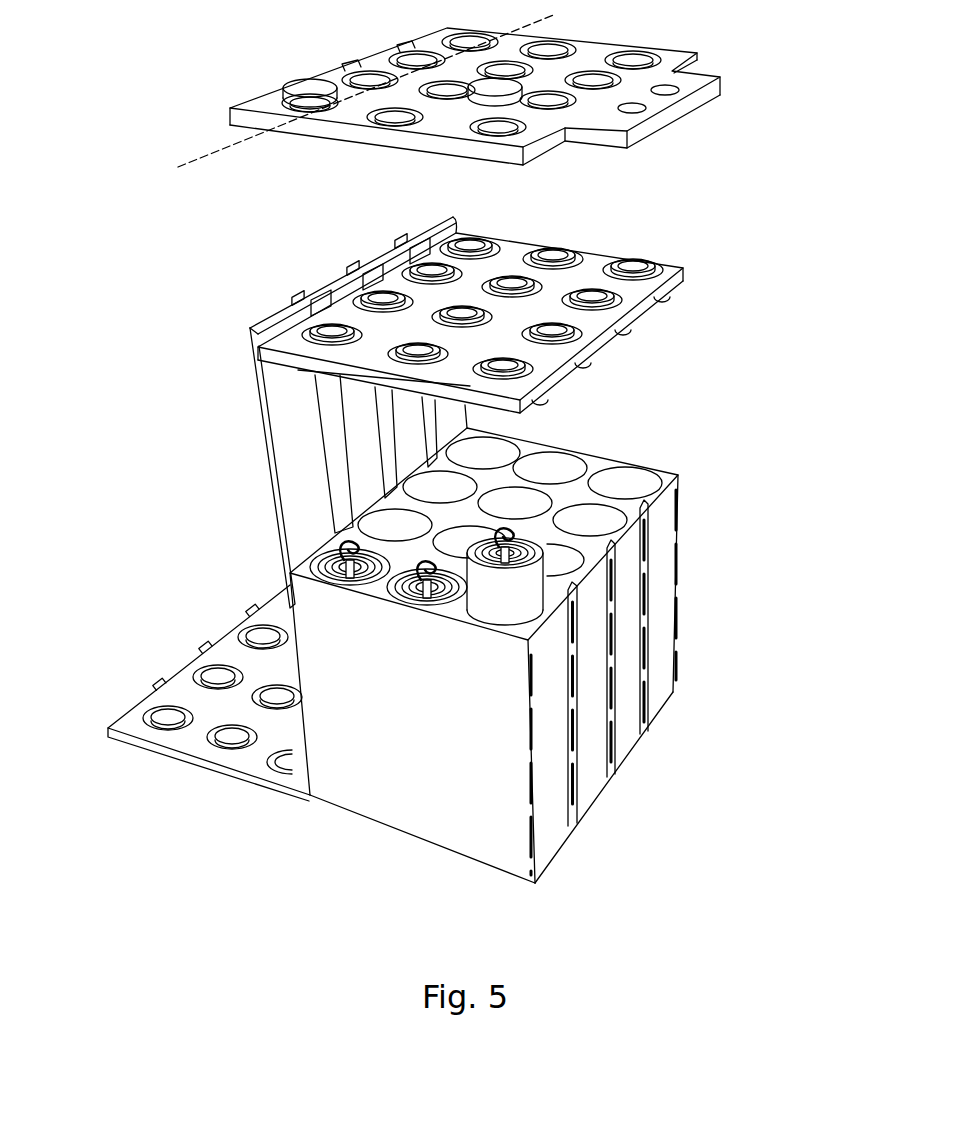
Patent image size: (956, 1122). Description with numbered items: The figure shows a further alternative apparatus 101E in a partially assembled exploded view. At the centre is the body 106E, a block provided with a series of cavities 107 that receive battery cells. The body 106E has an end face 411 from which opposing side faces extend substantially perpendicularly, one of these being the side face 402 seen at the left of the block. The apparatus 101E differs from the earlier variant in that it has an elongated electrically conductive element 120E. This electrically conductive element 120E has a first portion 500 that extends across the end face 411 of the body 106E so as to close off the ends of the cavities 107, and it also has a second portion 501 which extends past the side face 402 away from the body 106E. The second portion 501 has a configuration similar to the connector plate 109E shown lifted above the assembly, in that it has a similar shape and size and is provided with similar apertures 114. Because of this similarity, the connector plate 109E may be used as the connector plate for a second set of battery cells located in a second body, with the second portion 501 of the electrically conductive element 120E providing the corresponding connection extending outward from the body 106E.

The apparatus 101E is at (664, 857).
The body 106E is at (459, 546).
The cavities 107 is at (635, 482).
The connector plate 109E is at (678, 112).
The apertures 114 is at (168, 723).
The electrically conductive element 120E is at (197, 725).
The side face 402 is at (292, 661).
The end face 411 is at (363, 833).
The first portion 500 is at (515, 659).
The second portion 501 is at (125, 721).